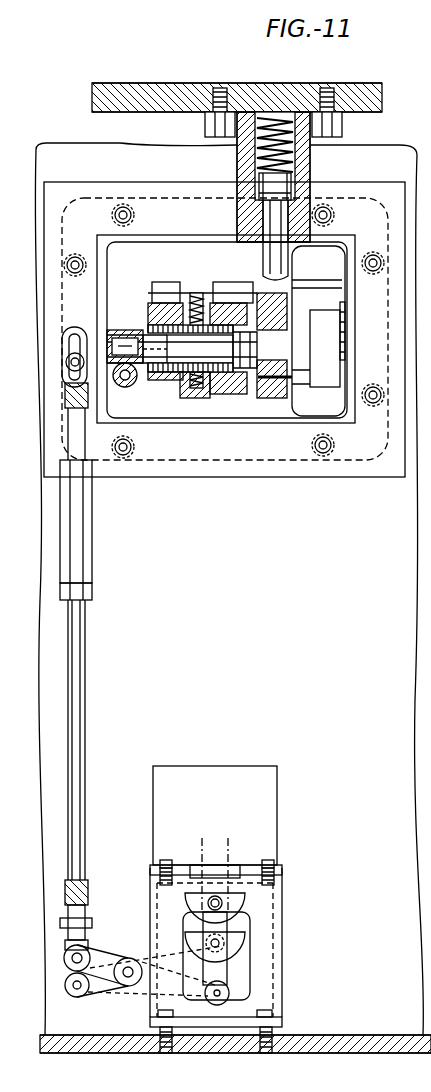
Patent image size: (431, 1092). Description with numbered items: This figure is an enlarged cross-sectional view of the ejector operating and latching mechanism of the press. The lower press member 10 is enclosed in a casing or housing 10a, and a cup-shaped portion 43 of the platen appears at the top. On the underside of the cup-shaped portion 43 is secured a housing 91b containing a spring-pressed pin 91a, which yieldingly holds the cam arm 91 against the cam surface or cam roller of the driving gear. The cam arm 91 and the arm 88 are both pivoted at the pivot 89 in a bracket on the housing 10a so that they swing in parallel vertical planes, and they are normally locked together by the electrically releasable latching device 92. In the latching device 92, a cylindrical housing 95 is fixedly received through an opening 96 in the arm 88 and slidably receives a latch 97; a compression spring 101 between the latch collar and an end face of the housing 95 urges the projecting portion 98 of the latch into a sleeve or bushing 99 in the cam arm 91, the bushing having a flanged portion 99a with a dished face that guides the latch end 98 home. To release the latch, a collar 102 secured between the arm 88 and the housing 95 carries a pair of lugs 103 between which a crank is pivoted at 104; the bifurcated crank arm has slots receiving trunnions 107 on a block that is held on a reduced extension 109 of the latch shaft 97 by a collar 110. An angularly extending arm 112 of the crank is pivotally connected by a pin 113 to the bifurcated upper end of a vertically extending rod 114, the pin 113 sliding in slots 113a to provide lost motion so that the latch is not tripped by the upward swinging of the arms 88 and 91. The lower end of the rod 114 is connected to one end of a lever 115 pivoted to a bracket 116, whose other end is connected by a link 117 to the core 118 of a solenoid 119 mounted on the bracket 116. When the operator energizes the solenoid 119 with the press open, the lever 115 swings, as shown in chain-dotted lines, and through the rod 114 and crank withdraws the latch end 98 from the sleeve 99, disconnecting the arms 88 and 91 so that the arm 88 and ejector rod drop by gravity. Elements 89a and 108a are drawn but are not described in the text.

The lower press member 10 is at (418, 325).
The casing or housing 10a is at (72, 154).
The cup-shaped portion 43 is at (92, 100).
The arm 88 is at (208, 409).
The pivot 89 is at (345, 322).
The cover plate 89a is at (193, 252).
The cam arm 91 is at (274, 398).
The spring-pressed pin 91a is at (270, 254).
The housing 91b is at (304, 167).
The latching device 92 is at (226, 423).
The cylindrical housing 95 is at (146, 322).
The opening 96 is at (177, 386).
The latch 97 is at (187, 327).
The projecting portion 98 is at (257, 343).
The sleeve or bushing 99 is at (265, 379).
The flanged portion 99a is at (273, 400).
The compression spring 101 is at (201, 304).
The collar 102 is at (148, 405).
The lugs 103 is at (119, 388).
The pivot 104 is at (104, 406).
The trunnions 107 is at (182, 350).
The retainer 108a is at (133, 303).
The reduced extension 109 is at (121, 330).
The collar 110 is at (103, 345).
The arm 112 is at (97, 410).
The pin 113 is at (70, 352).
The slots 113a is at (70, 327).
The rod 114 is at (75, 714).
The lever 115 is at (101, 960).
The bracket 116 is at (162, 1002).
The link 117 is at (228, 975).
The core 118 is at (228, 925).
The solenoid 119 is at (267, 838).